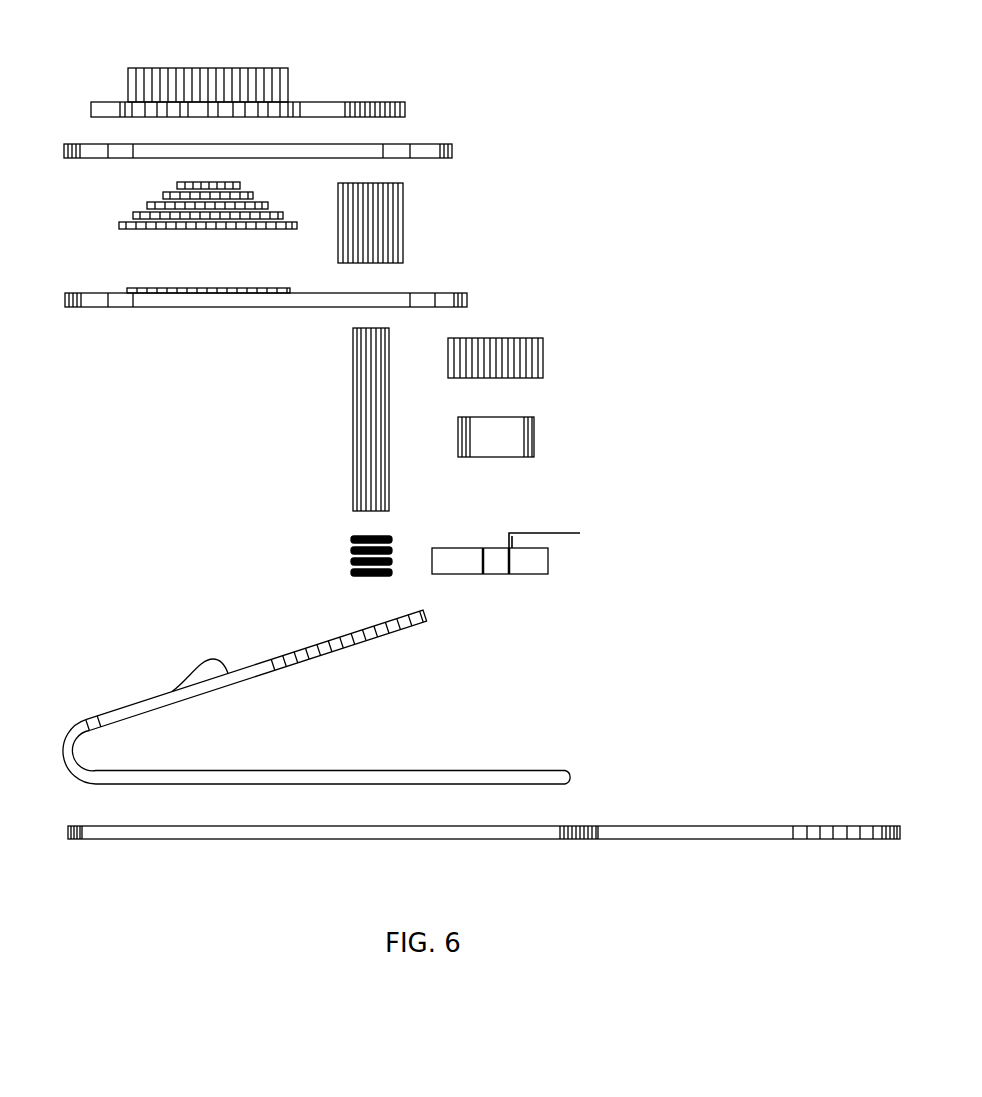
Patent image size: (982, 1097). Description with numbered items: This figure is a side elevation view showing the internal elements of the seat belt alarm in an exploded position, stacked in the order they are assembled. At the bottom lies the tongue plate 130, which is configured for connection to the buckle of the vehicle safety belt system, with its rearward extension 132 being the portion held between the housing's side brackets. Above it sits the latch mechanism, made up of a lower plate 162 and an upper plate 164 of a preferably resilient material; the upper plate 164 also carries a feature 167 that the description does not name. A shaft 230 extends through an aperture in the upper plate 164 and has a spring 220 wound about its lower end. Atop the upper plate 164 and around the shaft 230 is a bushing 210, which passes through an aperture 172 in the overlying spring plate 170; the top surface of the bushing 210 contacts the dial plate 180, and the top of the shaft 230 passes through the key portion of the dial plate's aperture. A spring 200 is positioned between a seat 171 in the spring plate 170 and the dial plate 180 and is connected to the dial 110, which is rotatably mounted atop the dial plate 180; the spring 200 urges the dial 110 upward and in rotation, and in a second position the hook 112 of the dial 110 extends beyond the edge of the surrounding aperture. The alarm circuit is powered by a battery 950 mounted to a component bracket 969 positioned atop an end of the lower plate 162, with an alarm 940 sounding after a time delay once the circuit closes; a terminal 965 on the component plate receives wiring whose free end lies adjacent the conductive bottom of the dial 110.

The dial 110 is at (288, 68).
The hook 112 is at (403, 102).
The dial plate 180 is at (452, 148).
The spring 200 is at (177, 182).
The bushing 210 is at (403, 227).
The seat 171 is at (192, 288).
The spring plate 170 is at (65, 298).
The aperture 172 is at (437, 307).
The shaft 230 is at (353, 410).
The battery 950 is at (543, 360).
The alarm 940 is at (535, 437).
The spring 220 is at (350, 558).
The component bracket 969 is at (548, 565).
The terminal 965 is at (568, 532).
The lower plate 162 is at (322, 770).
The upper plate 164 is at (152, 712).
The clip detent bump 167 is at (223, 670).
The tongue plate 130 is at (665, 838).
The rearward extension 132 is at (222, 839).